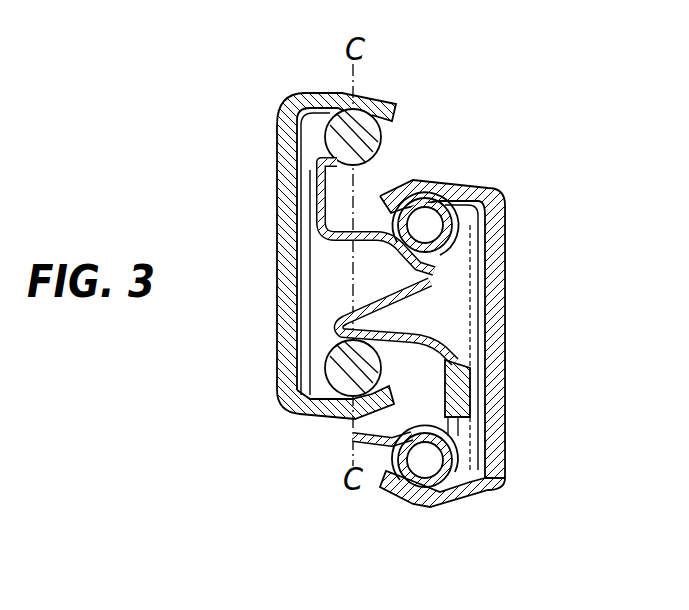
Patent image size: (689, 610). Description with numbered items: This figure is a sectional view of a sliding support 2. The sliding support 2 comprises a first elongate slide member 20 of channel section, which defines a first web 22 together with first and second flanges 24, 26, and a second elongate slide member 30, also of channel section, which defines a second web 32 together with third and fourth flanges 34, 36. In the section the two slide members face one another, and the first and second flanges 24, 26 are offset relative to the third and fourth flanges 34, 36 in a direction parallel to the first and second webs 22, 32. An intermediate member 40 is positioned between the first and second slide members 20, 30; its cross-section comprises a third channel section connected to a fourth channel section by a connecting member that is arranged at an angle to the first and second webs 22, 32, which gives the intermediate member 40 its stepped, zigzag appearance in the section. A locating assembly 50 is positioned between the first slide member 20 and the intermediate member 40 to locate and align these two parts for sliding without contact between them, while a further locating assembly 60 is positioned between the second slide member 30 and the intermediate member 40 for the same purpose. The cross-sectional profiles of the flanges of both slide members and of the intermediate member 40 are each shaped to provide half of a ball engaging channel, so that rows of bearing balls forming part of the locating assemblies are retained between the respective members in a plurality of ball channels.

The sliding support 2 is at (522, 148).
The first elongate slide member 20 is at (527, 337).
The first web 22 is at (500, 283).
The first flange 24 is at (449, 180).
The second flange 26 is at (430, 502).
The second elongate slide member 30 is at (255, 193).
The second web 32 is at (287, 245).
The third flange 34 is at (298, 407).
The fourth flange 36 is at (337, 93).
The intermediate member 40 is at (353, 437).
The locating assembly 50 is at (440, 460).
The further locating assembly 60 is at (340, 144).